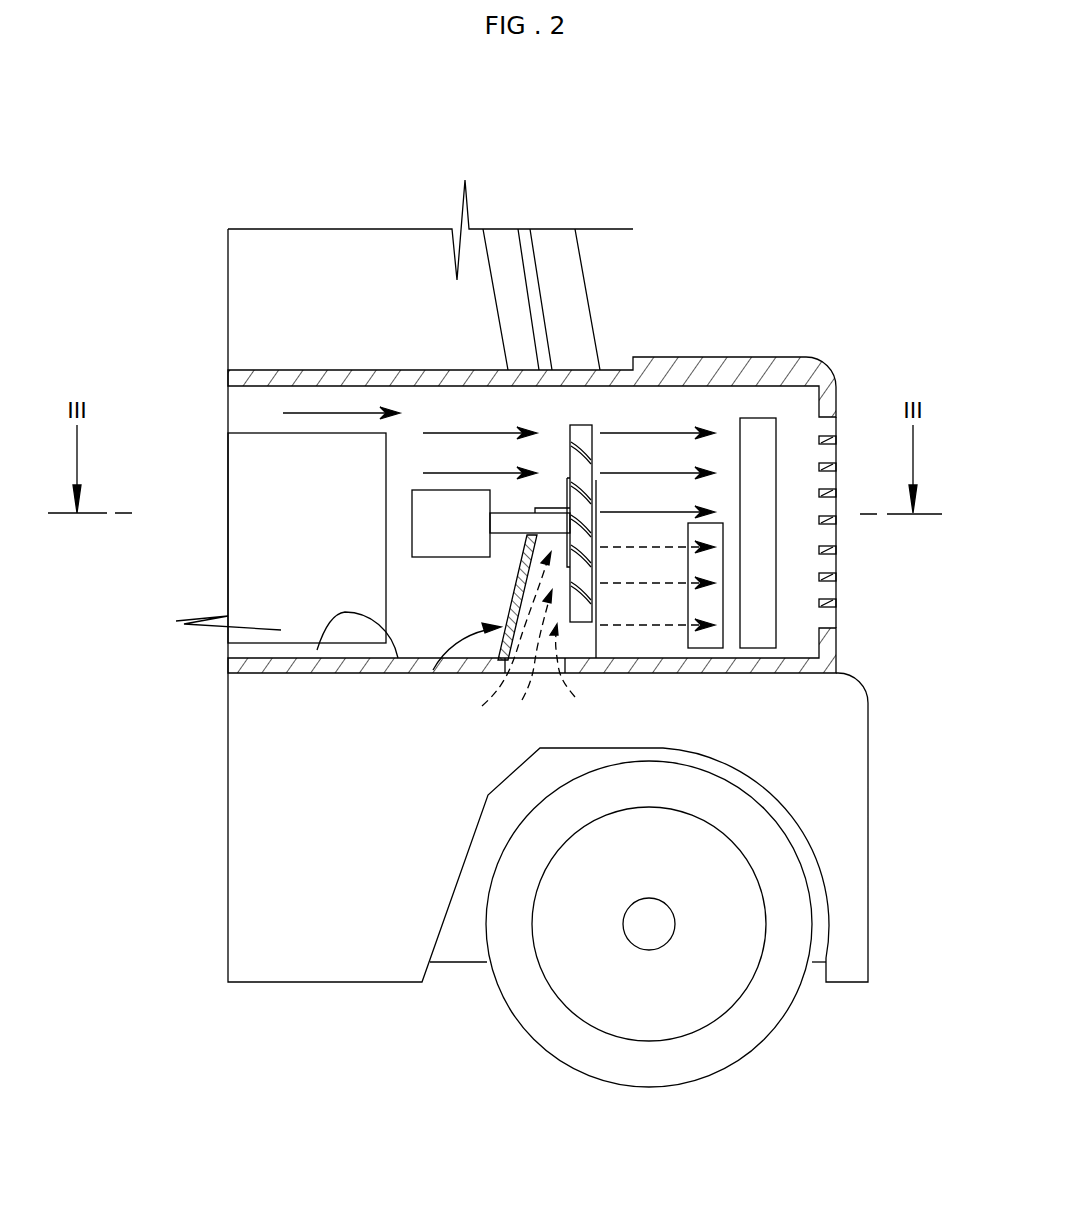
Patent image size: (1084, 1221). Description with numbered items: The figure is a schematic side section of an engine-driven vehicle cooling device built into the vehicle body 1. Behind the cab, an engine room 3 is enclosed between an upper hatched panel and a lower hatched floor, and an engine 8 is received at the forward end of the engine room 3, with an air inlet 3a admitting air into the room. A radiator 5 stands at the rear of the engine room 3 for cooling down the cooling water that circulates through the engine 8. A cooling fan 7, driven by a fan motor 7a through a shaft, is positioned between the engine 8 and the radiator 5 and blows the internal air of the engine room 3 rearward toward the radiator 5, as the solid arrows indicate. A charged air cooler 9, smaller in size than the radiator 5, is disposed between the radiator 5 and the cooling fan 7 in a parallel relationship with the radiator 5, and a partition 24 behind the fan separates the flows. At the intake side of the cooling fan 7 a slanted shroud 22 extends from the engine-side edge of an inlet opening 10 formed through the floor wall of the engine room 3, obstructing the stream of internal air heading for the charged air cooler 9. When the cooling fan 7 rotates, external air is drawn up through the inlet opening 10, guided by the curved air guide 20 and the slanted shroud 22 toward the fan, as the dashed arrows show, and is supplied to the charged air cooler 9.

The vehicle body (cabin floor panel) 1 is at (285, 383).
The engine room 3 is at (261, 398).
The engine room air inlet 3a is at (317, 650).
The radiator 5 is at (757, 432).
The cooling fan 7 is at (593, 428).
The fan motor 7a is at (444, 515).
The engine 8 is at (260, 465).
The heat exchanger (condenser/oil cooler) 9 is at (705, 628).
The air intake opening 10 is at (533, 668).
The air guide 20 is at (433, 670).
The guide plate 22 is at (510, 601).
The partition wall 24 is at (588, 640).